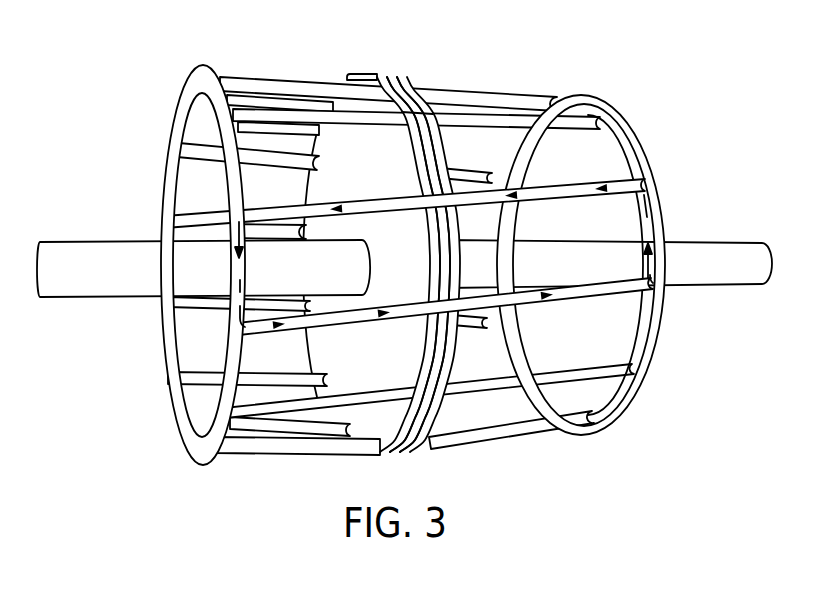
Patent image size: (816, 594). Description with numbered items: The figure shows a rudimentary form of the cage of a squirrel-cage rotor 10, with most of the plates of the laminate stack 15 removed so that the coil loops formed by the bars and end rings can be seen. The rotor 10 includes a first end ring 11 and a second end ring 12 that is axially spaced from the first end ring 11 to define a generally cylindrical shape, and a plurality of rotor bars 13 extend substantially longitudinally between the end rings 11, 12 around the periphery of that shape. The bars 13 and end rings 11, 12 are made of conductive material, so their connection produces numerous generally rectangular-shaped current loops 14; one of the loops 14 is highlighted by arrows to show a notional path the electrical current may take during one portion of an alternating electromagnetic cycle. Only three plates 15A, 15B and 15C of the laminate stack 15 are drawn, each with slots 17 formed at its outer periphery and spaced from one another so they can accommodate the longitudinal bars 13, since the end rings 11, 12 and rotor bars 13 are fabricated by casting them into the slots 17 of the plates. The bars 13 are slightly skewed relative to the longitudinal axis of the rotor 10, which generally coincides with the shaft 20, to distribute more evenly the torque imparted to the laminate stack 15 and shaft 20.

The rotor 10 is at (404, 262).
The first end ring 11 is at (190, 68).
The second end ring 12 is at (591, 102).
The rotor bars 13 is at (286, 80).
The current loops 14 is at (651, 206).
The laminate stack 15 is at (402, 75).
The plate 15A is at (365, 450).
The plate 15B is at (412, 440).
The plate 15C is at (432, 427).
The slots 17 is at (415, 110).
The shaft 20 is at (67, 247).